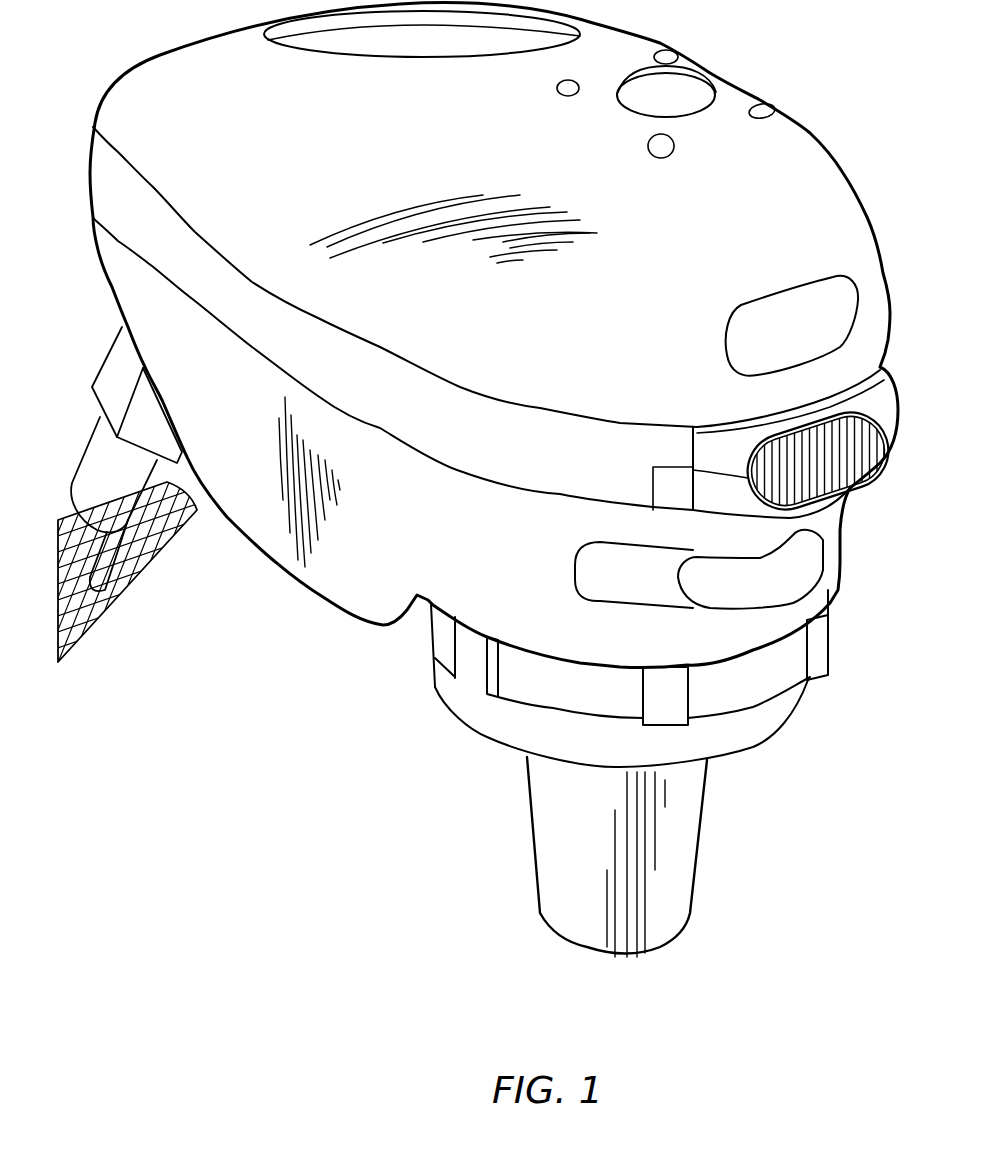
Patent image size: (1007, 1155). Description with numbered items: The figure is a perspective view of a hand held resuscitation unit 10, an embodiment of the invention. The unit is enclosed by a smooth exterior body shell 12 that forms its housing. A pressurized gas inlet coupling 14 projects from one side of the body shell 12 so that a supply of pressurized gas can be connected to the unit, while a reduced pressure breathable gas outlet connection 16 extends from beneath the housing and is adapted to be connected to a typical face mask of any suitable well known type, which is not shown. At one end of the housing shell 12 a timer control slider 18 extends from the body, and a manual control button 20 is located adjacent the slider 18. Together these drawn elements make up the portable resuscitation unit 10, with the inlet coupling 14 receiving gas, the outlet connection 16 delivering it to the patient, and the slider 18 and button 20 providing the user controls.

The hand held resuscitation unit 10 is at (373, 688).
The exterior body shell 12 is at (337, 547).
The pressurized gas inlet coupling 14 is at (157, 577).
The reduced pressure breathable gas outlet connection 16 is at (563, 853).
The timer control slider 18 is at (782, 570).
The manual control button 20 is at (823, 477).